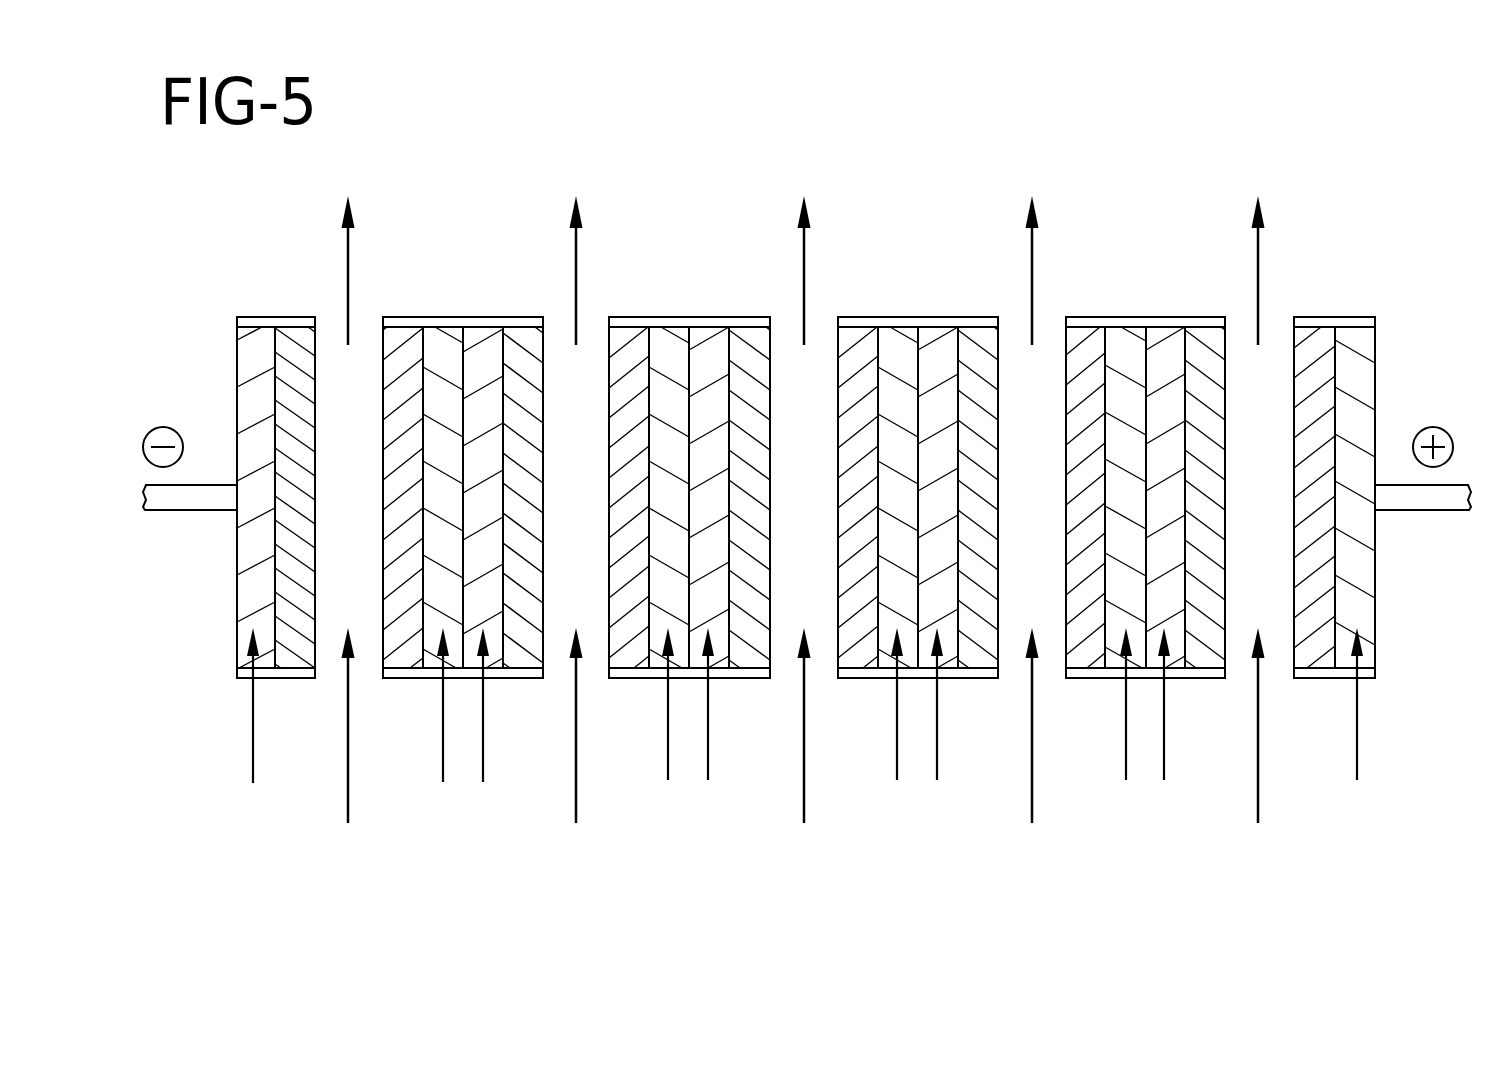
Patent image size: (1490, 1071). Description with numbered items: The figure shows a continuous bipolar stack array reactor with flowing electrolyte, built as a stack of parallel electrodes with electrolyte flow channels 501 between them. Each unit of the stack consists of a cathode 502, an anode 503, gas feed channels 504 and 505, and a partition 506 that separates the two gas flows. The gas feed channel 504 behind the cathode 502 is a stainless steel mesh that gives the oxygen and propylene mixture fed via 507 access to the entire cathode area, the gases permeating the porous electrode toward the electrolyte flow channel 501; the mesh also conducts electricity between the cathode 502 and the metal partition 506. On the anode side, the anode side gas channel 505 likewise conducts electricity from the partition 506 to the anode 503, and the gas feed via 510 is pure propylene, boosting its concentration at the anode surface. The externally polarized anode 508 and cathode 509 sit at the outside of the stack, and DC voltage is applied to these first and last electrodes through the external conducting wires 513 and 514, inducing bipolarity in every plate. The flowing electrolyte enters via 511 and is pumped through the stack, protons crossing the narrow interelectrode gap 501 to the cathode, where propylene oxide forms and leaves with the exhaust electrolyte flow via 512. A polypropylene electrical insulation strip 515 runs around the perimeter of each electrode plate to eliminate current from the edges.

The electrolyte flow channel 501 is at (785, 333).
The cathode 502 is at (297, 350).
The anode 503 is at (395, 512).
The gas feed channel 504 is at (249, 603).
The anode side gas channel 505 is at (435, 598).
The partition 506 is at (472, 332).
The cathode gas feed 507 is at (252, 707).
The externally polarized anode 508 is at (1375, 405).
The externally polarized cathode 509 is at (237, 407).
The anode gas feed 510 is at (442, 758).
The electrolyte feed 511 is at (347, 790).
The exhaust electrolyte flow 512 is at (346, 264).
The external conducting wire 513 is at (1413, 510).
The external conducting wire 514 is at (180, 512).
The electrical insulation strip 515 is at (260, 323).